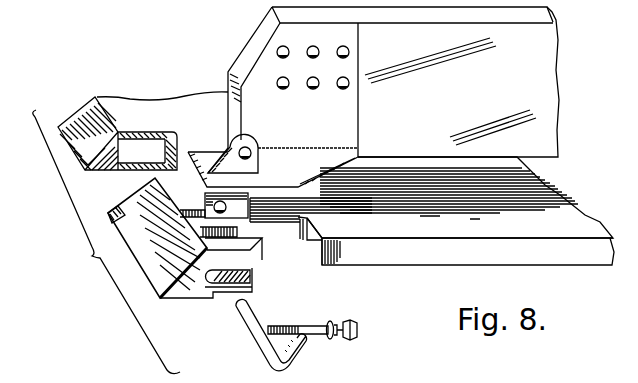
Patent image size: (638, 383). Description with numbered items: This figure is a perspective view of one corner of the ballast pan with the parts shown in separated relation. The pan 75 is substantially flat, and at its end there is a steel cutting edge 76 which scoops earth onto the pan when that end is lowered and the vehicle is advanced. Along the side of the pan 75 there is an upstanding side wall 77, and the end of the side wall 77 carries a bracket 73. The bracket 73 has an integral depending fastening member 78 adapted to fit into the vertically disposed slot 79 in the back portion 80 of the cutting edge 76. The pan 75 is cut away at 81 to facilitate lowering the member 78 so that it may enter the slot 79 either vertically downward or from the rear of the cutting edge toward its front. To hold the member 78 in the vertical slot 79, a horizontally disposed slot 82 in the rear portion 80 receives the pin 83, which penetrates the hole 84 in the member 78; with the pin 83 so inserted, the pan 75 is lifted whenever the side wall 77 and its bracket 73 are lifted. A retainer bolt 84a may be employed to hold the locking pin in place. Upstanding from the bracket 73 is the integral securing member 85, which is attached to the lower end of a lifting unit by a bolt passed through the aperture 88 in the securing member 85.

The bracket 73 is at (335, 152).
The pan 75 is at (556, 255).
The cutting edge 76 is at (190, 287).
The side wall 77 is at (548, 58).
The fastening member 78 is at (247, 220).
The vertically disposed slot 79 is at (200, 232).
The back portion 80 is at (228, 290).
The cut away 81 is at (316, 246).
The horizontally disposed slot 82 is at (244, 284).
The pin 83 is at (262, 345).
The hole 84 is at (207, 206).
The retainer bolt 84a is at (305, 336).
The securing member 85 is at (258, 160).
The aperture 88 is at (250, 147).